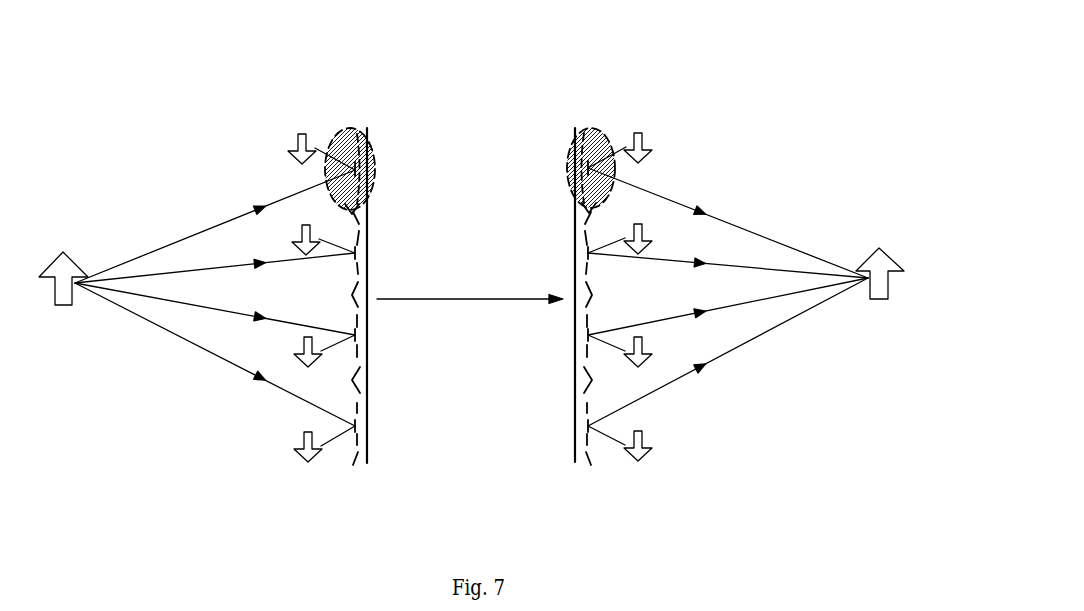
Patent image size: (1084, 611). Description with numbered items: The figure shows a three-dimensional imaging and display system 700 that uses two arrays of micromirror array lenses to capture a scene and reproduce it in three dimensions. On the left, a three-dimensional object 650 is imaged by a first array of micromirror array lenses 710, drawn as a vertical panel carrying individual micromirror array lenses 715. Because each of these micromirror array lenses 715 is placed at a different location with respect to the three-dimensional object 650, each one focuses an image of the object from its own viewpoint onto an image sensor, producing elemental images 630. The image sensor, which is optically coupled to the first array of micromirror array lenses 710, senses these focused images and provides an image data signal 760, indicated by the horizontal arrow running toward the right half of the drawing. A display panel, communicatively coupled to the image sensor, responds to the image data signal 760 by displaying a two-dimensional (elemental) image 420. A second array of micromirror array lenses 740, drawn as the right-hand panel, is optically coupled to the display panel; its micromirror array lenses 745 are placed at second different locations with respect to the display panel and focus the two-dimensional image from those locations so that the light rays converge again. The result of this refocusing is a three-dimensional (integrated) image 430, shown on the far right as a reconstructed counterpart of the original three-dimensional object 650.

The three-dimensional imaging and display system 700 is at (669, 72).
The three-dimensional object 650 is at (78, 250).
The elemental images 630 is at (305, 127).
The micromirror array lenses 715 is at (352, 125).
The first array of micromirror array lenses 710 is at (357, 462).
The image data signal 760 is at (472, 292).
The second array of micromirror array lenses 740 is at (587, 462).
The micromirror array lenses 745 is at (598, 125).
The two-dimensional (elemental) image 420 is at (645, 140).
The three-dimensional (integrated) image 430 is at (897, 291).